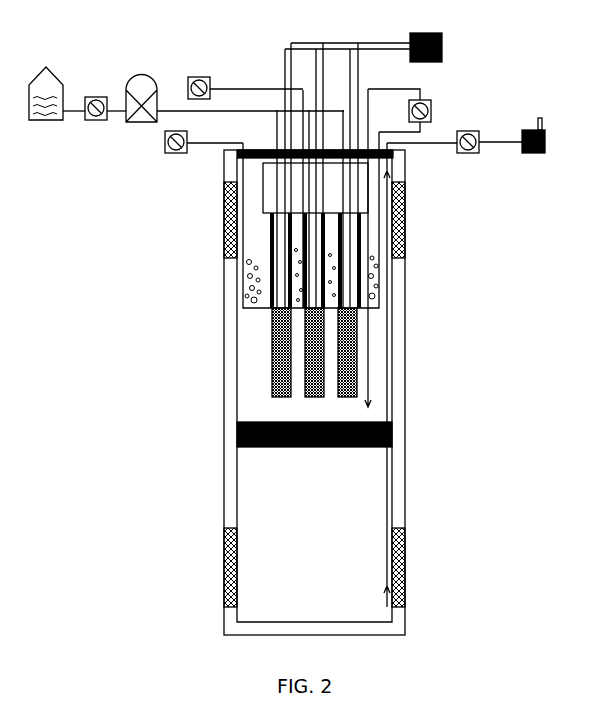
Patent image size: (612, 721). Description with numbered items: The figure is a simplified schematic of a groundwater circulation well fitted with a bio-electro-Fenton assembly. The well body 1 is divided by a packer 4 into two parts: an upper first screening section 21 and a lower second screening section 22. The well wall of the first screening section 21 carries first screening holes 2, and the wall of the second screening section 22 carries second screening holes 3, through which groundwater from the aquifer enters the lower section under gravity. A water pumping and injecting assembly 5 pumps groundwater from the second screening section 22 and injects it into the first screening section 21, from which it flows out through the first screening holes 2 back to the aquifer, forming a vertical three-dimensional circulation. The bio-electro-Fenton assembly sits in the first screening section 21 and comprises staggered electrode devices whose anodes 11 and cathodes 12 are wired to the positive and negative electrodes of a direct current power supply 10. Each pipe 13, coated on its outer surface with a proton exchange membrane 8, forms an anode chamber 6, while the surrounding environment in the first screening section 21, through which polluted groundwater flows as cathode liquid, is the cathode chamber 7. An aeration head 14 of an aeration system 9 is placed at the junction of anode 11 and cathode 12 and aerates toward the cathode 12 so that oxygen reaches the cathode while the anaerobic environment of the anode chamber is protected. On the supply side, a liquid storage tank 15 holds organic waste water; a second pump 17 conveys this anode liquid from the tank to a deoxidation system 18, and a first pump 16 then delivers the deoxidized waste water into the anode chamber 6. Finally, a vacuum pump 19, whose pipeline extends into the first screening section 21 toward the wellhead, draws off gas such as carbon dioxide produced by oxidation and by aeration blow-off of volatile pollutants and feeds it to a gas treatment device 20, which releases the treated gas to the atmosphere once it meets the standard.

The well body 1 is at (405, 373).
The first screening hole 2 is at (405, 550).
The second screening hole 3 is at (405, 230).
The packer 4 is at (392, 425).
The water pumping and injecting assembly 5 is at (430, 103).
The anode chamber 6 is at (375, 277).
The cathode chamber 7 is at (373, 345).
The proton exchange membrane 8 is at (272, 342).
The aeration system 9 is at (167, 148).
The power supply 10 is at (443, 47).
The anode 11 is at (272, 367).
The cathode 12 is at (263, 213).
The pipe 13 is at (272, 252).
The aeration head 14 is at (272, 303).
The liquid storage tank 15 is at (48, 120).
The first pump 16 is at (197, 77).
The second pump 17 is at (98, 120).
The deoxidation system 18 is at (140, 73).
The vacuum pump 19 is at (480, 150).
The gas treatment device 20 is at (543, 131).
The first screening section 21 is at (285, 412).
The second screening section 22 is at (287, 488).